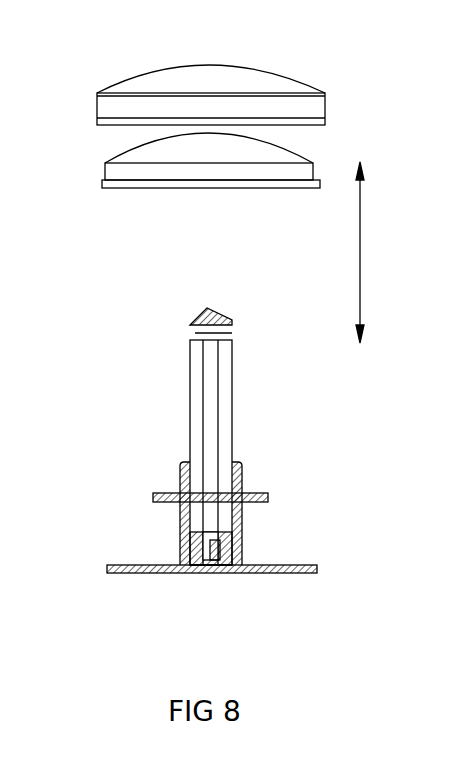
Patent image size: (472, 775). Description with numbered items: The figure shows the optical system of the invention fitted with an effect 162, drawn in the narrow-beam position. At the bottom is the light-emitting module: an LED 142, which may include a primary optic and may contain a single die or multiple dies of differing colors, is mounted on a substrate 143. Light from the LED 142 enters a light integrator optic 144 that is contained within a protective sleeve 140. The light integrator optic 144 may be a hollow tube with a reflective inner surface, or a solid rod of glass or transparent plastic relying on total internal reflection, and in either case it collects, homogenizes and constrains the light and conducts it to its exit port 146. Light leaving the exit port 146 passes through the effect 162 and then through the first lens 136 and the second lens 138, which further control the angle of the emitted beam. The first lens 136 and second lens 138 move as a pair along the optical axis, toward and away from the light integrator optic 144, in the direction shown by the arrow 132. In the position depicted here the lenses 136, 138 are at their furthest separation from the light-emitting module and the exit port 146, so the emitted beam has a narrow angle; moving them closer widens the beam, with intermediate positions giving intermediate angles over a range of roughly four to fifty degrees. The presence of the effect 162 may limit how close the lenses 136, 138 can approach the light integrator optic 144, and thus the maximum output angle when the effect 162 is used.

The arrow 132 is at (382, 252).
The first lens 136 is at (120, 87).
The second lens 138 is at (110, 163).
The protective sleeve 140 is at (195, 415).
The LED 142 is at (192, 565).
The substrate 143 is at (253, 573).
The light integrator optic 144 is at (233, 540).
The exit port 146 is at (212, 340).
The effect 162 is at (232, 316).